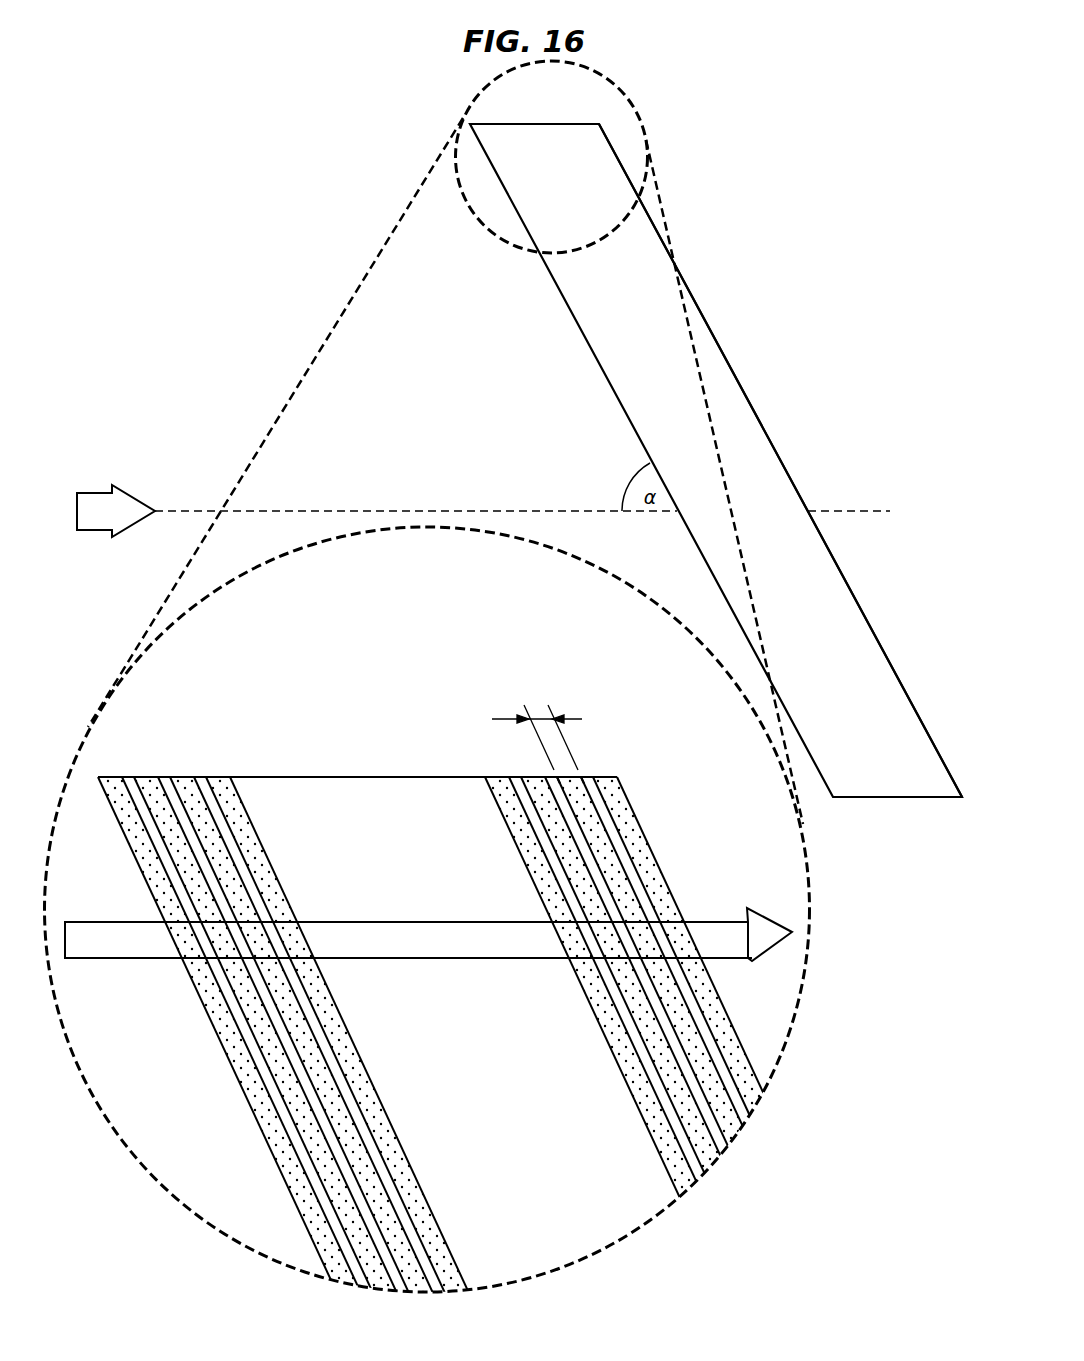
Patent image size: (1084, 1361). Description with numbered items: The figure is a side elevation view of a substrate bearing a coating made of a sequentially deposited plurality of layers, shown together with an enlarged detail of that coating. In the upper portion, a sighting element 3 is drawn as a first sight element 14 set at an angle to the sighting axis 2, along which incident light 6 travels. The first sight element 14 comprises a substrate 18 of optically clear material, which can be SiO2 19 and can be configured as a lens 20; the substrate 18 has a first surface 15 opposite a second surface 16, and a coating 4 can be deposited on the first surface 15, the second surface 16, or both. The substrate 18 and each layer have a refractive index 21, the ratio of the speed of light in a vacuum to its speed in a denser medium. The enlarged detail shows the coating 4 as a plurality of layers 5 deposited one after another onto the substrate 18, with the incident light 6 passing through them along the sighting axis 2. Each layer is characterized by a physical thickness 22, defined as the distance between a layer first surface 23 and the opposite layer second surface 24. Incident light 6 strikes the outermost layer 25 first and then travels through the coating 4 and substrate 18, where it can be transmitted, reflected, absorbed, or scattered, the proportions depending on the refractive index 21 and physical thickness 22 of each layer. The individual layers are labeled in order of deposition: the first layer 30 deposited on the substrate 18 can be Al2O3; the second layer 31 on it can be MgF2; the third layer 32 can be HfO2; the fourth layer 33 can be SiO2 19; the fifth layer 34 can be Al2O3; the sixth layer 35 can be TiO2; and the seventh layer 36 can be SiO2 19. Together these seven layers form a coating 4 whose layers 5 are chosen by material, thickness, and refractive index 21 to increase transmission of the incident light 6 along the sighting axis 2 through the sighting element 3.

The sighting axis 2 is at (308, 511).
The sighting element 3 is at (750, 222).
The coating 4 is at (285, 1003).
The plurality of layers 5 is at (285, 1003).
The incident light 6 is at (115, 719).
The first sight element 14 is at (780, 460).
The first surface 15 is at (351, 1011).
The second surface 16 is at (506, 825).
The substrate 18 is at (716, 460).
The SiO2 19 is at (794, 661).
The lens 20 is at (743, 372).
The refractive index 21 is at (428, 934).
The physical thickness 22 is at (536, 719).
The layer first surface 23 is at (581, 788).
The layer second surface 24 is at (558, 786).
The outermost layer 25 is at (268, 1123).
The first layer 30 is at (683, 1160).
The second layer 31 is at (700, 1177).
The third layer 32 is at (715, 1158).
The fourth layer 33 is at (725, 1147).
The fifth layer 34 is at (727, 1129).
The sixth layer 35 is at (747, 1122).
The seventh layer 36 is at (758, 1104).